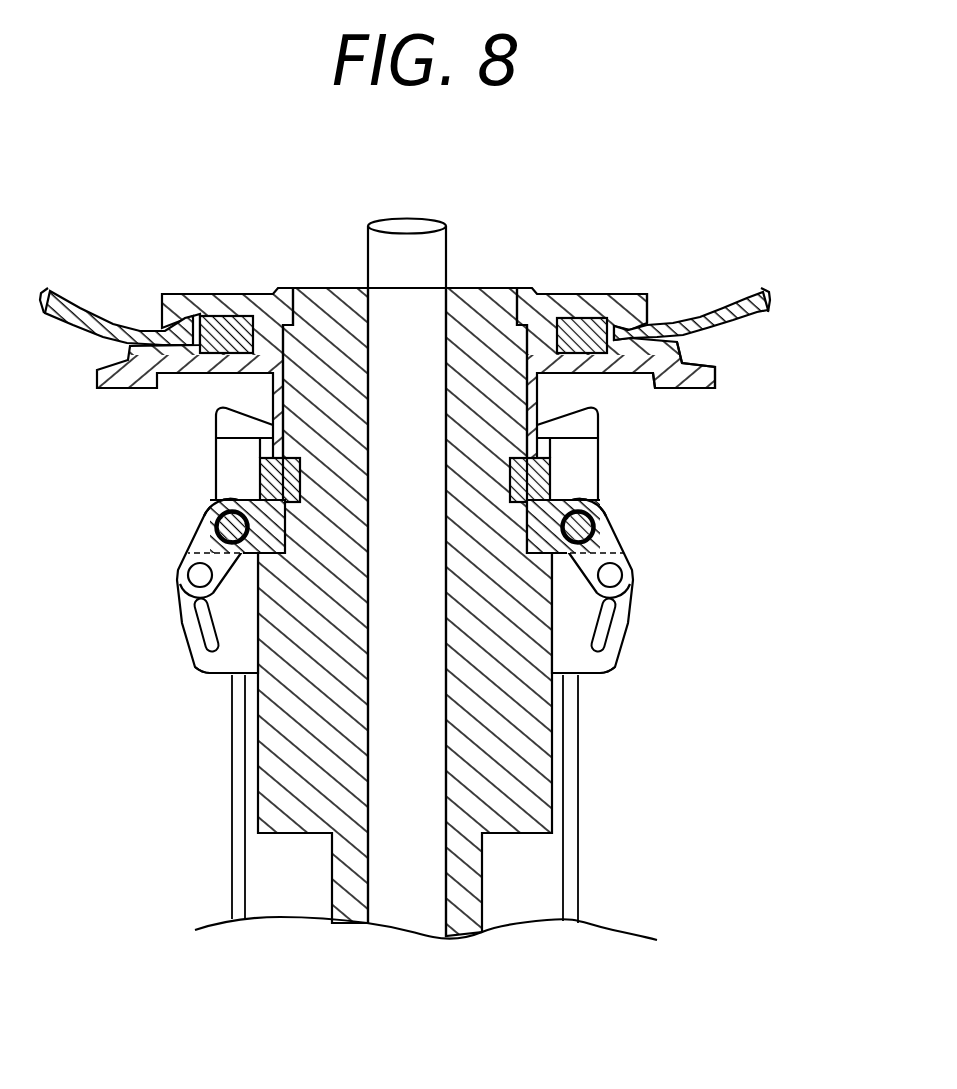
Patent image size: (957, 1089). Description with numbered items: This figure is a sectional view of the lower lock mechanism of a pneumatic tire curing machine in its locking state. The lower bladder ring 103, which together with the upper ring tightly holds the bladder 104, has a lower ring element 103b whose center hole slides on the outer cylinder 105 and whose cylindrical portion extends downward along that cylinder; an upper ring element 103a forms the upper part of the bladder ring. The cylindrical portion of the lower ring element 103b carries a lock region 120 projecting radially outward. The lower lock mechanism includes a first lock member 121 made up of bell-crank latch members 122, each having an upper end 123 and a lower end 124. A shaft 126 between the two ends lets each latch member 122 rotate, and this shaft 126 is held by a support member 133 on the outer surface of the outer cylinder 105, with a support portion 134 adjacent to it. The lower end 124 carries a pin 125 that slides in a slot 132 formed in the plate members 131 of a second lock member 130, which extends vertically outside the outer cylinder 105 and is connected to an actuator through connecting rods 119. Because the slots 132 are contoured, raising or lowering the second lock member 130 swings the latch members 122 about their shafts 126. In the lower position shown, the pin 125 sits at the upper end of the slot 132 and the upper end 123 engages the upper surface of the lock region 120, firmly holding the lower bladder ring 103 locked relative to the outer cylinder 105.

The lower bladder ring 103 is at (572, 290).
The upper flange of housing 103a is at (612, 297).
The lower ring element 103b is at (700, 366).
The bladder 104 is at (734, 303).
The outer cylinder 105 is at (485, 303).
The connecting rods 119 is at (580, 842).
The lock region 120 is at (515, 432).
The first lock member 121 is at (594, 477).
The latch member 122 is at (585, 450).
The upper end 123 is at (596, 420).
The lower end 124 is at (600, 523).
The pin 125 is at (622, 572).
The shaft 126 is at (575, 532).
The second lock member 130 is at (642, 610).
The plate members 131 is at (600, 663).
The slots 132 is at (606, 640).
The support member 133 is at (575, 520).
The support portion 134 is at (604, 506).